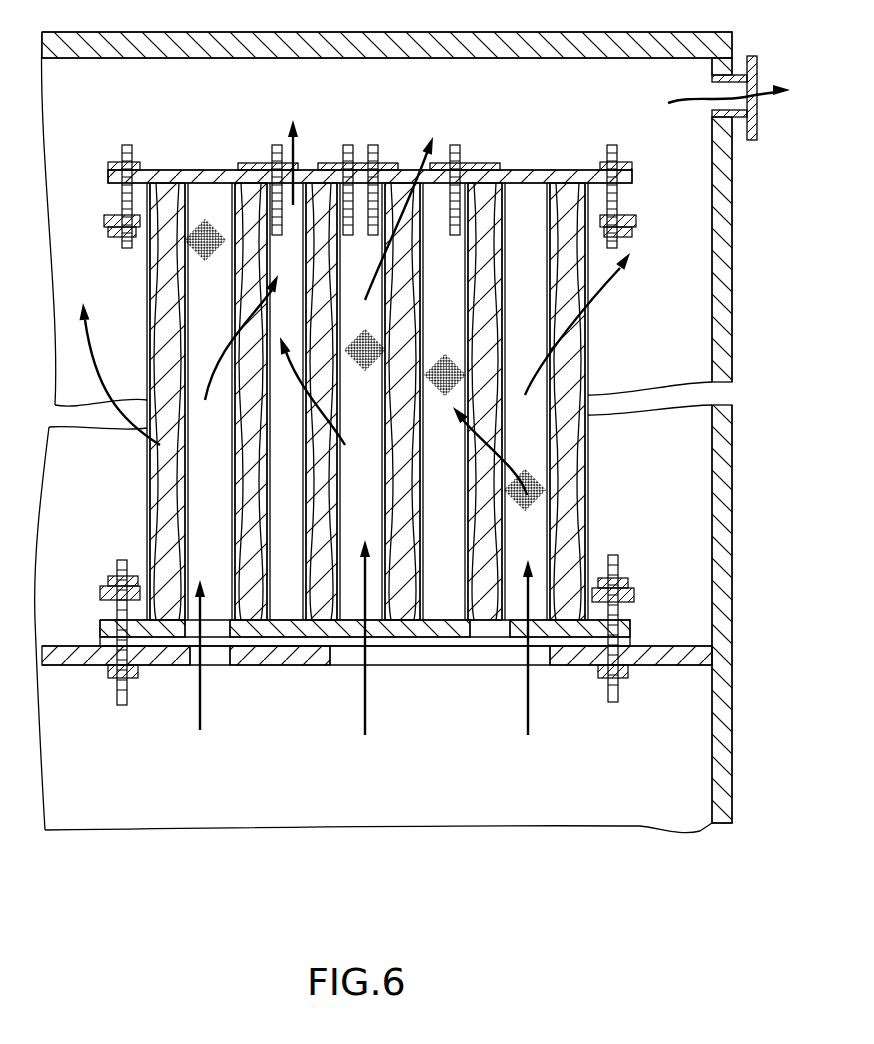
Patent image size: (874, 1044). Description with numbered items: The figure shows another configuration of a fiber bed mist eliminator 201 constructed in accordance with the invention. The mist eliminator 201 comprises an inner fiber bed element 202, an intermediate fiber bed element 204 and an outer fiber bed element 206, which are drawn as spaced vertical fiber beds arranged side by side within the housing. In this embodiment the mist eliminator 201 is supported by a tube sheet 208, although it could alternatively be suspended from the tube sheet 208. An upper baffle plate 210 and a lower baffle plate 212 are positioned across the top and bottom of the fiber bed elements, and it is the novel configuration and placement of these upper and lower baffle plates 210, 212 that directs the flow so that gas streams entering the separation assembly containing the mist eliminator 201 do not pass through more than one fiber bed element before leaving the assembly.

The mist eliminator 201 is at (498, 106).
The inner fiber bed element 202 is at (405, 622).
The intermediate fiber bed element 204 is at (490, 622).
The outer fiber bed element 206 is at (572, 622).
The tube sheet 208 is at (675, 661).
The upper baffle plate 210 is at (530, 182).
The lower baffle plate 212 is at (300, 626).